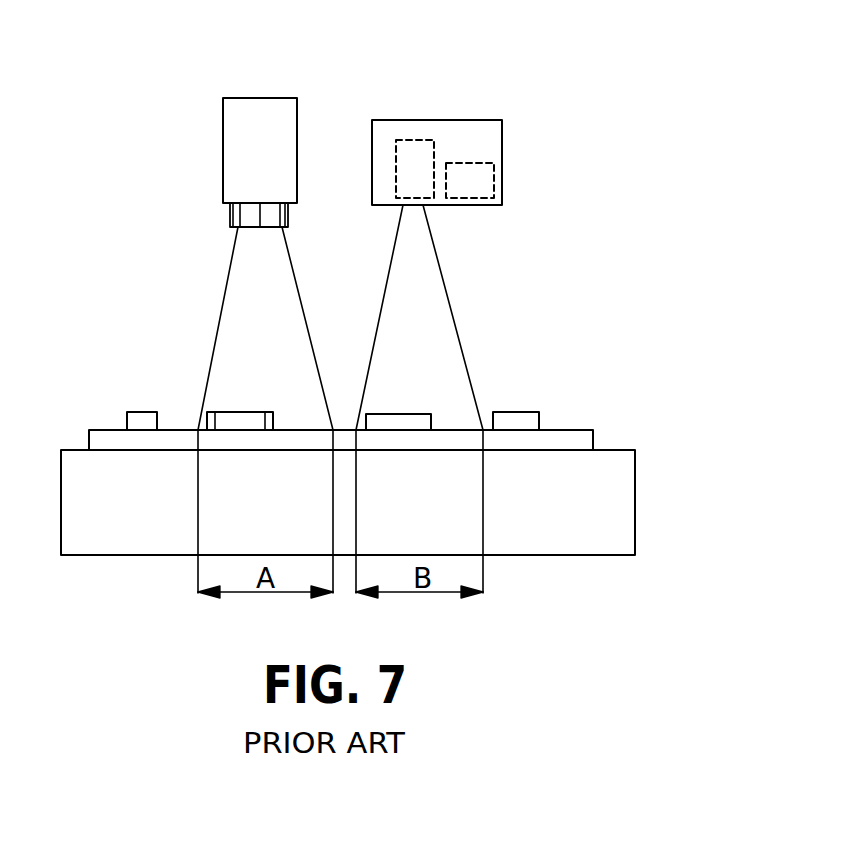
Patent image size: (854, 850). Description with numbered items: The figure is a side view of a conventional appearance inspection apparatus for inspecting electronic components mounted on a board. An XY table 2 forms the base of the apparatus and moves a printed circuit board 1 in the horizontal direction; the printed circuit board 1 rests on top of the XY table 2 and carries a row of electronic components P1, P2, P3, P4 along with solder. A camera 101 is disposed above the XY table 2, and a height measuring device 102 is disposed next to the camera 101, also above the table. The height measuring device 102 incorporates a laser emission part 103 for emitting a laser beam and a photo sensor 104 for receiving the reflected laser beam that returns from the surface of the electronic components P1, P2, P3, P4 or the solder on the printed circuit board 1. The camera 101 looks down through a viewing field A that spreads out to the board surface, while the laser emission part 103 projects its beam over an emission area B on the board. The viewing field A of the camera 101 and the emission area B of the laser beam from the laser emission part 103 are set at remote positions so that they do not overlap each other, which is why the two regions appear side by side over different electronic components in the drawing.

The camera 101 is at (260, 98).
The height measuring device 102 is at (400, 120).
The laser emission part 103 is at (436, 153).
The photo sensor 104 is at (477, 163).
The printed circuit board 1 is at (593, 438).
The XY table 2 is at (635, 520).
The electronic component P1 is at (142, 412).
The electronic component P2 is at (240, 412).
The electronic component P3 is at (405, 414).
The electronic component P4 is at (517, 412).